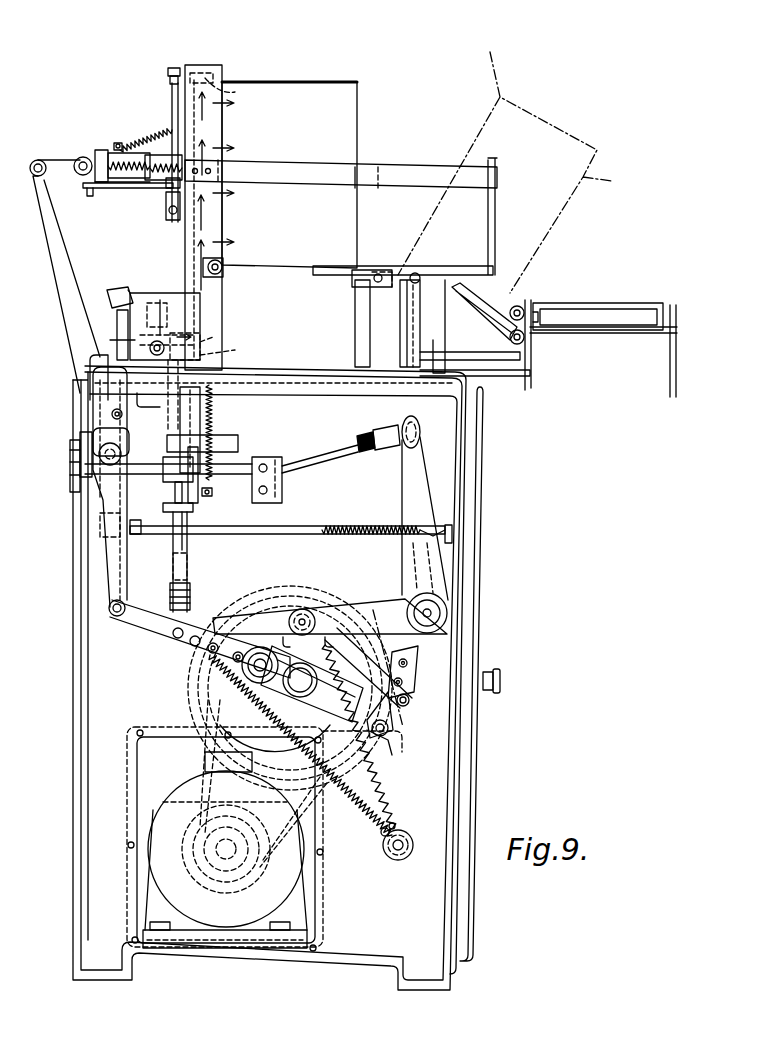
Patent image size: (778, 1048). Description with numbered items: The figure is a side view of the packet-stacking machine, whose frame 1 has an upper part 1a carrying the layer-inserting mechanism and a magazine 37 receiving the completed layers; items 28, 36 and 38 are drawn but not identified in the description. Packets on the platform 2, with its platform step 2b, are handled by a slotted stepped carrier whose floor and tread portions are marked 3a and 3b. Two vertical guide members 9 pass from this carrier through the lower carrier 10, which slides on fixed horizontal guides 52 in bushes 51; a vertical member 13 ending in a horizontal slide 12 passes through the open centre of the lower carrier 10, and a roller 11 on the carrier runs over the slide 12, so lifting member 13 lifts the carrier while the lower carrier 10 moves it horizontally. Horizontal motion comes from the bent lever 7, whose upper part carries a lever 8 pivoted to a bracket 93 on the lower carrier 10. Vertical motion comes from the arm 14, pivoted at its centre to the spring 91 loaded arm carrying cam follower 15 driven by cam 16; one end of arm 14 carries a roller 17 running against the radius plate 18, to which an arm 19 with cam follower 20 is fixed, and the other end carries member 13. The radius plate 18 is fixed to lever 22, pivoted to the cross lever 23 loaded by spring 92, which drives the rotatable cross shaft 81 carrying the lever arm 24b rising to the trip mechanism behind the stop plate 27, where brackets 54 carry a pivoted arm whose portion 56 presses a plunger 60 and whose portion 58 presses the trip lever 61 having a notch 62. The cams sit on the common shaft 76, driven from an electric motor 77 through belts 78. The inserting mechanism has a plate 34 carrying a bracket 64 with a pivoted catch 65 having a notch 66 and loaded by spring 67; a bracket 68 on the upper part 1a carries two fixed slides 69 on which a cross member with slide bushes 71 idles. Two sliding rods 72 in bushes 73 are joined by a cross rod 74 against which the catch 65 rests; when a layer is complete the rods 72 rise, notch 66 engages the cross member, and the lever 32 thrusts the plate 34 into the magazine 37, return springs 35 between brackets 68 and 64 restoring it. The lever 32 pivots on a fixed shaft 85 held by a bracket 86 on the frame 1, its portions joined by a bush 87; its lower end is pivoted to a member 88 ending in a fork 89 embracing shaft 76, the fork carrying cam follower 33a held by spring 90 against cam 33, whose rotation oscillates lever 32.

The frame 1 is at (458, 617).
The upper part of the frame 1a is at (218, 66).
The guide 28 is at (228, 95).
The plate 34 is at (186, 222).
The magazine 37 is at (313, 81).
The hopper outline 36 is at (520, 172).
The chute 38 is at (626, 303).
The notch 66 is at (86, 160).
The catch 65 is at (112, 150).
The fixed slides 69 is at (137, 180).
The bracket 64 is at (165, 182).
The bracket 68 is at (163, 185).
The spring 67 is at (152, 136).
The vertically sliding rods 72 is at (175, 118).
The bushes 73 is at (169, 90).
The cross rod 74 is at (170, 216).
The slide bushes 71 is at (98, 190).
The return springs 35 is at (120, 187).
The portion of arm 58 is at (152, 290).
The stop plate 27 is at (130, 292).
The trip lever 61 is at (115, 295).
The notch 62 is at (116, 312).
The brackets 54 is at (170, 300).
The plunger 60 is at (153, 343).
The portion of arm 56 is at (188, 320).
The platform 2 is at (192, 330).
The platform step 2b is at (222, 331).
The tread carrying portion of carrier 3b is at (230, 348).
The lever arm 24b is at (110, 340).
The cam follower 20 is at (108, 360).
The lever 32 is at (90, 392).
The rotatable cross shaft 81 is at (112, 414).
The bracket 86 is at (98, 438).
The bush 87 is at (93, 448).
The fixed shaft 85 is at (100, 456).
The floor portion of carrier 3a is at (165, 437).
The roller 11 is at (211, 420).
The horizontal slide 12 is at (238, 443).
The bushes 51 is at (168, 462).
The fixed horizontal guides 52 is at (165, 472).
The lower carrier 10 is at (200, 505).
The vertical member 13 is at (170, 505).
The bracket 93 is at (213, 492).
The lever 8 is at (332, 453).
The bent lever 7 is at (430, 492).
The cross lever 23 is at (320, 527).
The spring 92 is at (380, 527).
The vertical guide members 9 is at (190, 548).
The member 88 is at (147, 637).
The arm 14 is at (238, 616).
The cam follower 33a is at (262, 612).
The cam follower 15 is at (302, 609).
The cam 16 is at (297, 632).
The lever 22 is at (435, 573).
The common shaft 76 is at (300, 697).
The fork 89 is at (338, 702).
The cam 33 is at (235, 680).
The spring 91 is at (380, 775).
The spring 90 is at (372, 802).
The radius plate 18 is at (415, 672).
The roller 17 is at (410, 701).
The arm 19 is at (398, 715).
The electric motor 77 is at (278, 800).
The belts 78 is at (203, 794).